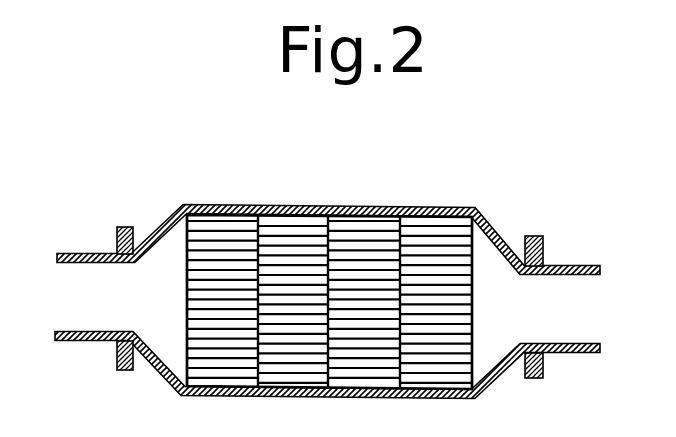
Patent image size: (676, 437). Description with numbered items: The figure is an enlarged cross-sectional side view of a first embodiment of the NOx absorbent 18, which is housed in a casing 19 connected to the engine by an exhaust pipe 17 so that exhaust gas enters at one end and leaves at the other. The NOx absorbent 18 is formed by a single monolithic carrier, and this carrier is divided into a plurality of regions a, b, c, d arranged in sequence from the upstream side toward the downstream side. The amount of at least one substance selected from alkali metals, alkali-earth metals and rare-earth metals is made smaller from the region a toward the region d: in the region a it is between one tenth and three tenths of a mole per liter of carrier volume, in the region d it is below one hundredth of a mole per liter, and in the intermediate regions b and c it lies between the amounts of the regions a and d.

The exhaust pipe 17 is at (70, 252).
The NOx absorbent 18 is at (313, 261).
The casing 19 is at (316, 207).
The region a is at (228, 232).
The region b is at (283, 235).
The region c is at (376, 232).
The region d is at (446, 232).